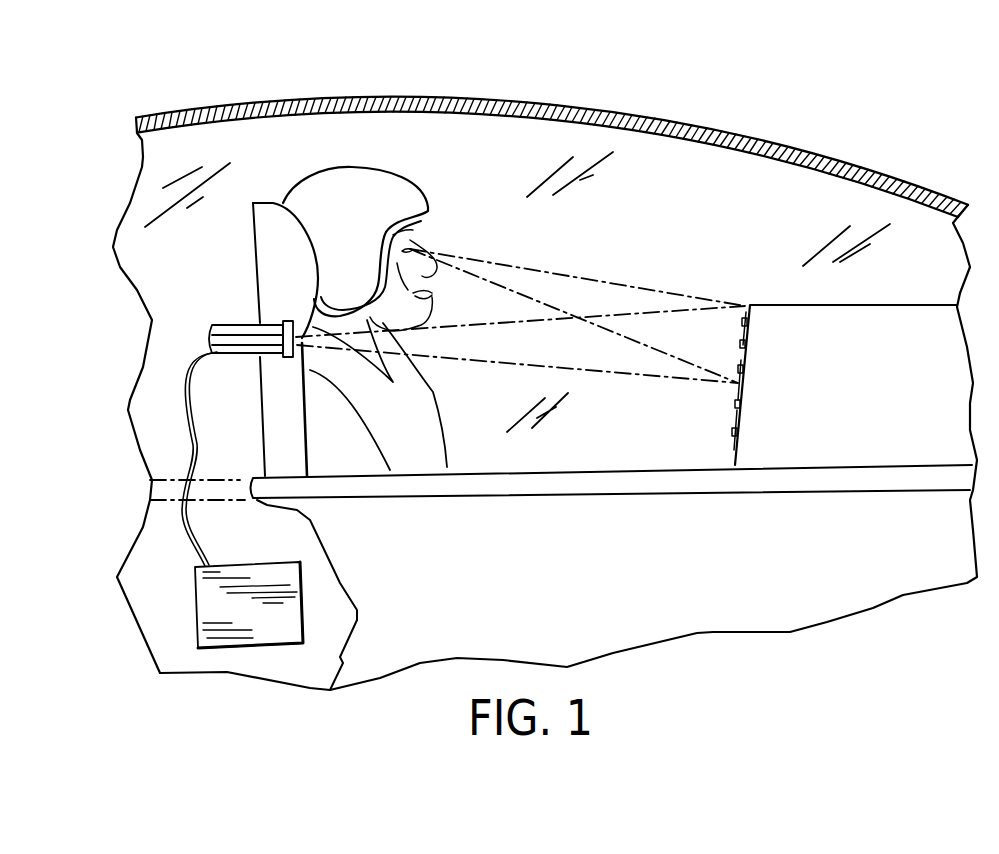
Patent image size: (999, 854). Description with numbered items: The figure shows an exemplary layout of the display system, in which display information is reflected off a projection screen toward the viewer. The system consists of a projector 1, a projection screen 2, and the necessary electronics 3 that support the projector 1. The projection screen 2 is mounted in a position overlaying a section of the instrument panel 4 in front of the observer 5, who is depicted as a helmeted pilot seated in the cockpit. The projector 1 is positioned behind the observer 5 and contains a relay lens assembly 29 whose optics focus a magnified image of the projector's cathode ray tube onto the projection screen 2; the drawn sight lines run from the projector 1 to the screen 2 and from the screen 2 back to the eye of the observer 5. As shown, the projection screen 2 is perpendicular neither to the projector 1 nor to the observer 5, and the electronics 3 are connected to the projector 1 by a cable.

The projector 1 is at (228, 323).
The projection screen 2 is at (743, 327).
The electronics 3 is at (198, 593).
The instrument panel 4 is at (730, 443).
The observer 5 is at (427, 186).
The relay lens assembly 29 is at (290, 323).